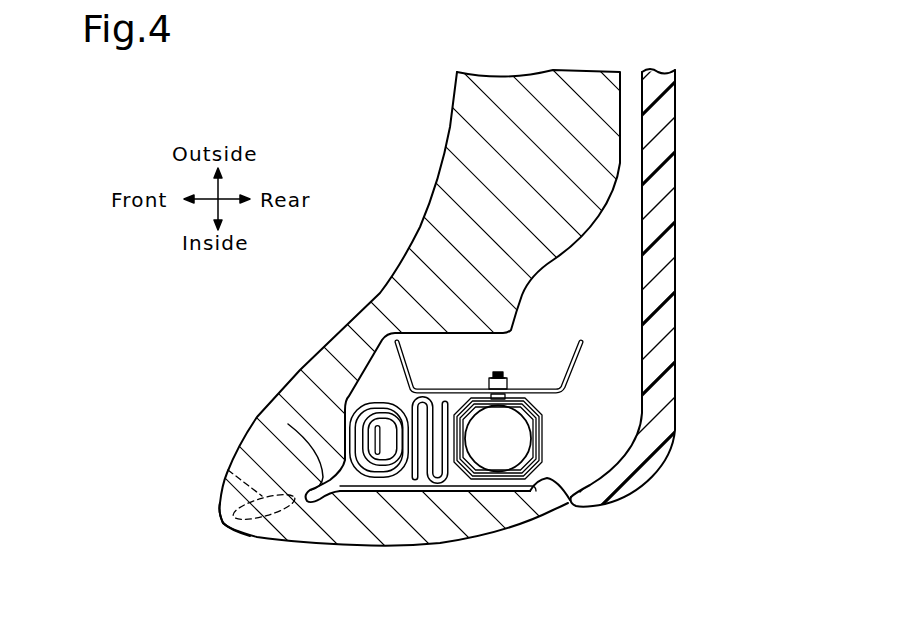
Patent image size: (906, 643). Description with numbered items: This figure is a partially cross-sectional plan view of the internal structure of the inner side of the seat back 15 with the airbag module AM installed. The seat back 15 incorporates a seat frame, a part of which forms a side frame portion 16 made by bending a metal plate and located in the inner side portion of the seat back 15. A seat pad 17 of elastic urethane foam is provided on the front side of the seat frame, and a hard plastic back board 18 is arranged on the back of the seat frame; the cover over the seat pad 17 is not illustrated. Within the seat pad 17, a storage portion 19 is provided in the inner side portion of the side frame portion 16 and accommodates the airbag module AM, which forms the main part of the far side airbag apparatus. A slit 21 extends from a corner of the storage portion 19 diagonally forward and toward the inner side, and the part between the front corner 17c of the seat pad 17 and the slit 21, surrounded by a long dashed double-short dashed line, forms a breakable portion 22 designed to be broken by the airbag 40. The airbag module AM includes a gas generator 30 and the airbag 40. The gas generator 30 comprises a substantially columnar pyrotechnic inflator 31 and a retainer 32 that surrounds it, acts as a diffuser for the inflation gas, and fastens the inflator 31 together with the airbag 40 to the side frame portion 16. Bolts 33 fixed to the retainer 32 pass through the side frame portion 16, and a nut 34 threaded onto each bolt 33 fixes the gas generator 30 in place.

The seat back 15 is at (362, 212).
The seat pad 17 is at (456, 129).
The front corner 17c is at (220, 518).
The back board 18 is at (678, 246).
The storage portion 19 is at (393, 489).
The slit 21 is at (288, 424).
The breakable portion 22 is at (228, 470).
The side frame portion 16 is at (570, 366).
The gas generator 30 is at (543, 437).
The inflator 31 is at (523, 426).
The retainer 32 is at (544, 447).
The bolts 33 is at (494, 375).
The nut 34 is at (508, 387).
The airbag 40 is at (348, 403).
The airbag module AM is at (378, 390).